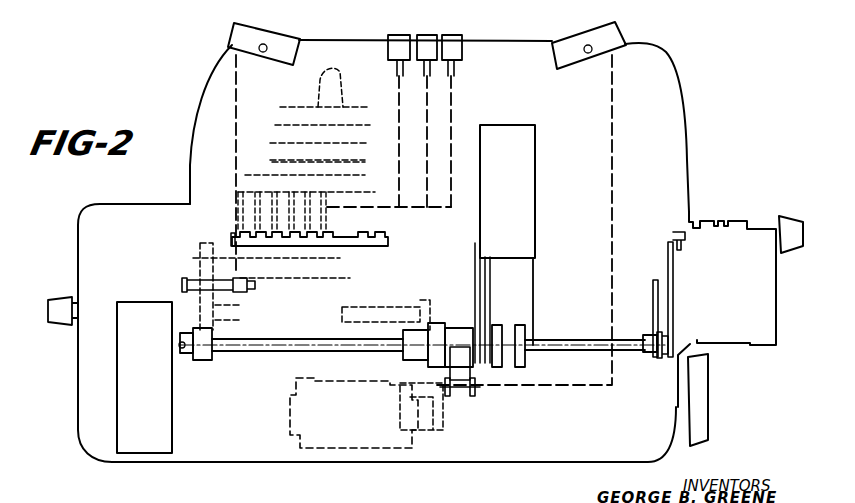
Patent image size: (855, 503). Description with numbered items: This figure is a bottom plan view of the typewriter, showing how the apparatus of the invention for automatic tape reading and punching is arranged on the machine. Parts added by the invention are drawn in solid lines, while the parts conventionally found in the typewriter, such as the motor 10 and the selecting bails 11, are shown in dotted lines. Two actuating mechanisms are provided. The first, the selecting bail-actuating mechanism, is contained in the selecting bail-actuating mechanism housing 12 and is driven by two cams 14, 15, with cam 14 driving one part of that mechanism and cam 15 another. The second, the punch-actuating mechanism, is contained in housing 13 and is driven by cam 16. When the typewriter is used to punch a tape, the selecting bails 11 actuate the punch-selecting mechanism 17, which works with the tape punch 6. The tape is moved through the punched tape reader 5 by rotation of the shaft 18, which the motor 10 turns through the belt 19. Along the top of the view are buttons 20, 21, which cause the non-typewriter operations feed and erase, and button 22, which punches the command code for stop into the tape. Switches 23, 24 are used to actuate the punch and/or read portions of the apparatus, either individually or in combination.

The punched tape reader 5 is at (741, 218).
The tape punch 6 is at (70, 225).
The motor 10 is at (345, 440).
The selecting bails 11 is at (340, 99).
The selecting bail-actuating mechanism housing 12 is at (510, 197).
The housing 13 is at (145, 448).
The cam 14 is at (506, 367).
The cam 15 is at (528, 367).
The cam 16 is at (210, 362).
The punch-selecting mechanism 17 is at (384, 246).
The shaft 18 is at (578, 310).
The belt 19 is at (436, 428).
The button 20 is at (396, 36).
The button 21 is at (433, 36).
The button 22 is at (463, 40).
The switch 23 is at (290, 44).
The switch 24 is at (578, 47).